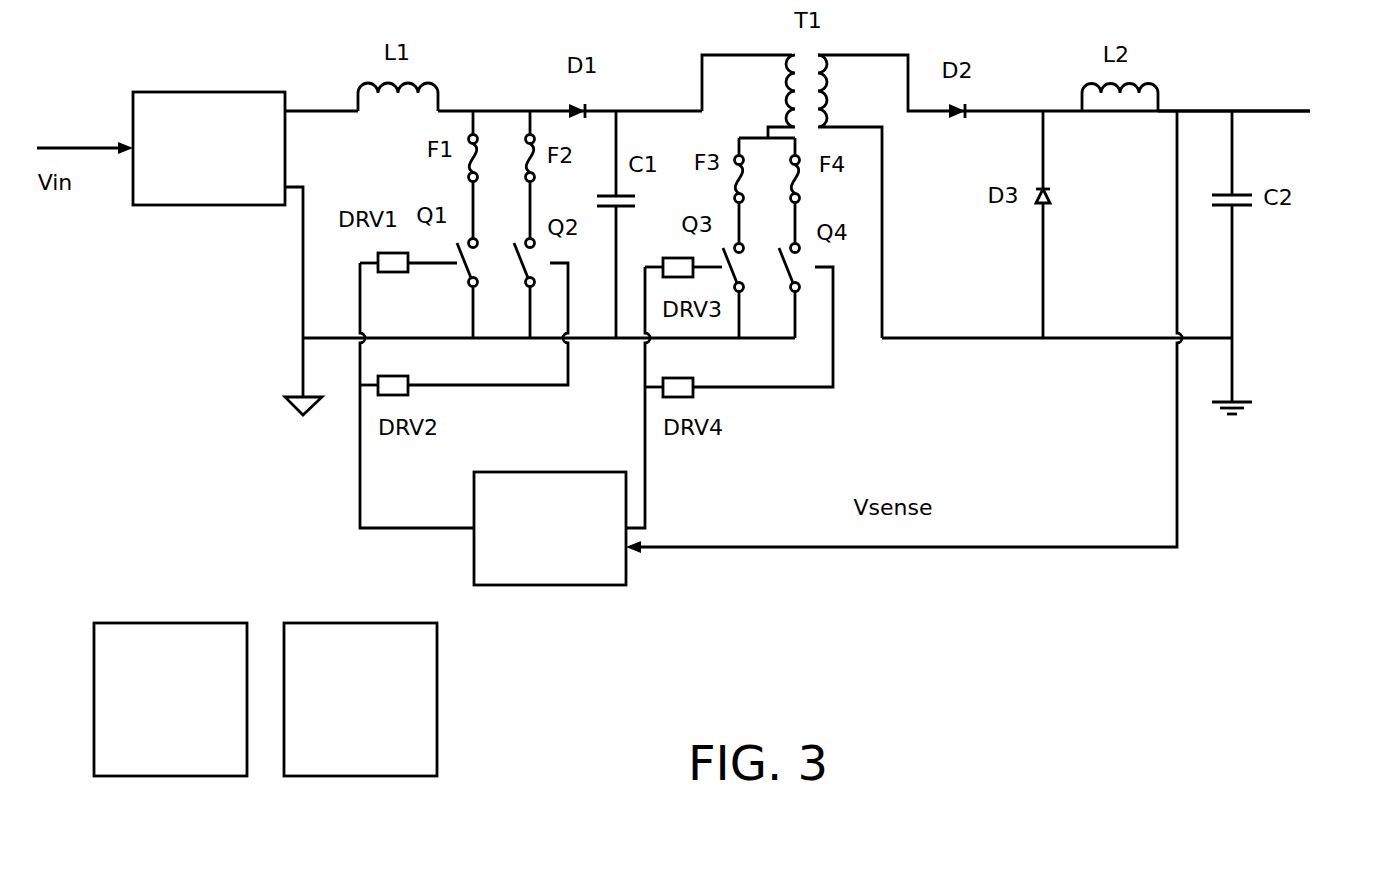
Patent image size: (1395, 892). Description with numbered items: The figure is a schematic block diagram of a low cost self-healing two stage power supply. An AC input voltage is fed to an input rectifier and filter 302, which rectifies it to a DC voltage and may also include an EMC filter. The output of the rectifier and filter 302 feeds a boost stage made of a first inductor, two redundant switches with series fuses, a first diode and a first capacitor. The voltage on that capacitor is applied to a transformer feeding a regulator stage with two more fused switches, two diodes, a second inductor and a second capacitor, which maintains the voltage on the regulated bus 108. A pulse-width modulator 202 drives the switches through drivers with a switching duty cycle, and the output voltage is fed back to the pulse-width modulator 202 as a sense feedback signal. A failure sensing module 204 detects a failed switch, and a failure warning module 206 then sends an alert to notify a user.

The input rectifier and filter 302 is at (209, 148).
The regulated bus 108 is at (1272, 100).
The pulse-width modulator 202 is at (550, 528).
The failure sensing module 204 is at (150, 755).
The failure warning module 206 is at (340, 755).